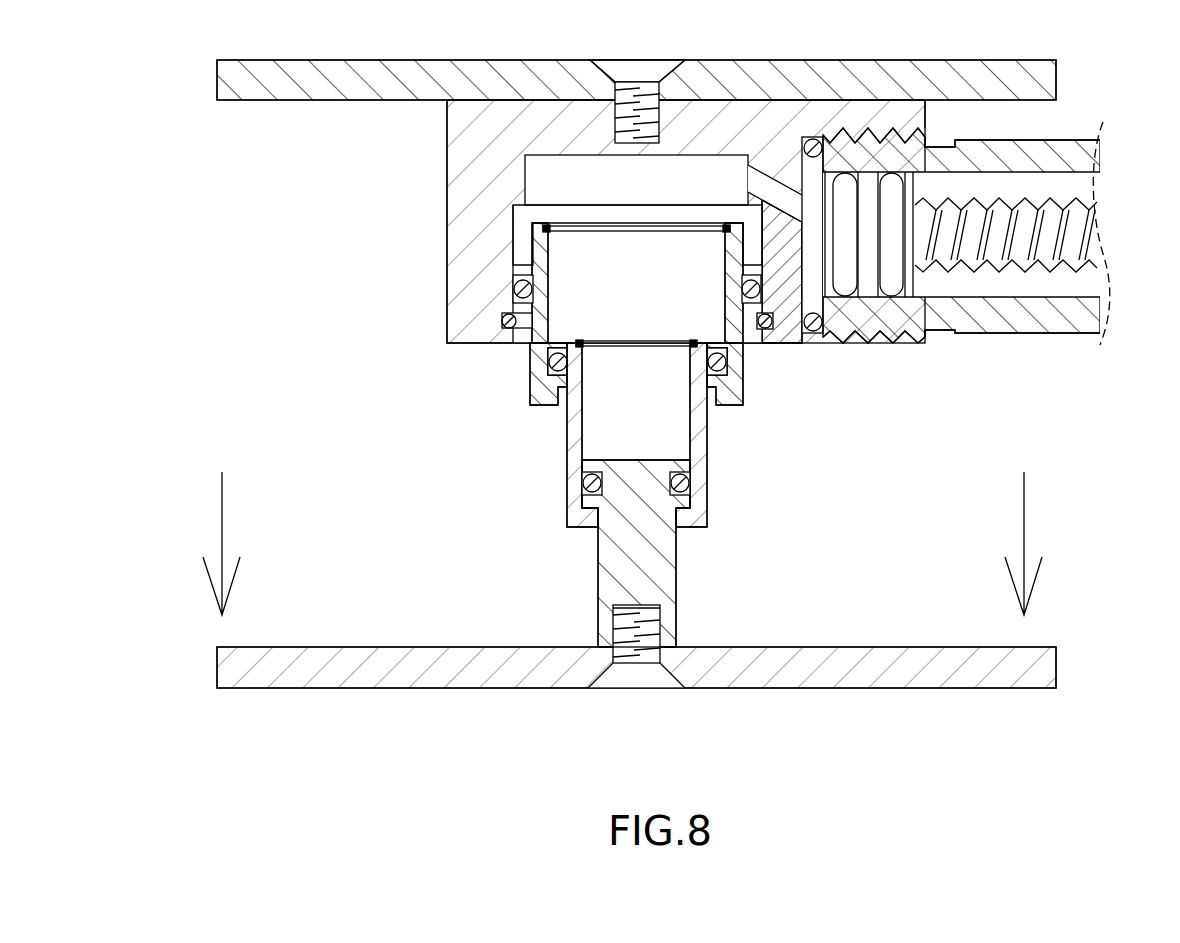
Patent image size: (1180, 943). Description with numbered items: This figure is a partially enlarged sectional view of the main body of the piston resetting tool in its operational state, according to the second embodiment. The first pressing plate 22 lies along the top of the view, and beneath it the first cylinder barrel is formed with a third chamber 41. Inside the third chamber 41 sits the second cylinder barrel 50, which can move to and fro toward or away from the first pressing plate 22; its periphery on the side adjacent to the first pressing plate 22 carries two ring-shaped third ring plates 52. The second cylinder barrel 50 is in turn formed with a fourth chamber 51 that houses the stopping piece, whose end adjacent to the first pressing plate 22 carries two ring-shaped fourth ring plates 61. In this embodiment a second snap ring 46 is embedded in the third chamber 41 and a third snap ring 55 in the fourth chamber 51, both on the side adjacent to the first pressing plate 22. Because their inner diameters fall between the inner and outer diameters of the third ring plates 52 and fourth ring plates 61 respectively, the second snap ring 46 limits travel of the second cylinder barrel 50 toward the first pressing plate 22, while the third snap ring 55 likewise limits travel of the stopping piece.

The first pressing plate 22 is at (1035, 78).
The third chamber 41 is at (697, 245).
The second snap ring 46 is at (545, 229).
The third snap ring 55 is at (530, 345).
The third ring plates 52 is at (713, 345).
The second cylinder barrel 50 is at (535, 377).
The fourth chamber 51 is at (667, 422).
The fourth ring plates 61 is at (590, 470).